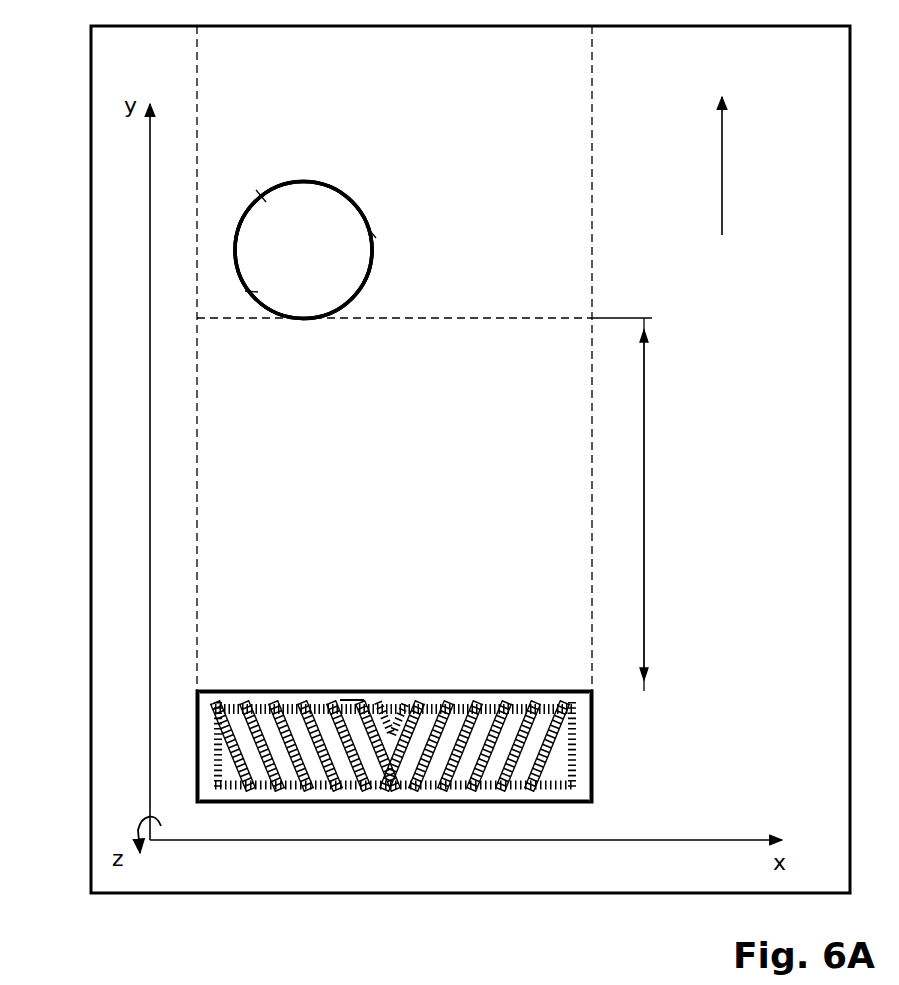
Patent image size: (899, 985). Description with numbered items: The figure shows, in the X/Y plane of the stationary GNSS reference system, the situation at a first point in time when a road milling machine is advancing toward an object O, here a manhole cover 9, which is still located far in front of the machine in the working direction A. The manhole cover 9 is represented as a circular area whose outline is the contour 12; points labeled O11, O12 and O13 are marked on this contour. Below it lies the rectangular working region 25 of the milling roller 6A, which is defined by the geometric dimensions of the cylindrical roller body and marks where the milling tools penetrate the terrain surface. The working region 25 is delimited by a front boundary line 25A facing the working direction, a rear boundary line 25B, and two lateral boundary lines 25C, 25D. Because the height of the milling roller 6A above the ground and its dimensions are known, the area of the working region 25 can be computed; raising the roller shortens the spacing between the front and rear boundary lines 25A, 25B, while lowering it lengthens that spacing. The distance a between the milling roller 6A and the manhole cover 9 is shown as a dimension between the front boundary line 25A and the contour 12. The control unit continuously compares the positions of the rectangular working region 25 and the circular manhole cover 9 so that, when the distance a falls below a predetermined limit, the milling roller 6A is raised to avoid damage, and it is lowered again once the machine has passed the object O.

The object O is at (372, 180).
The manhole cover 9 is at (327, 207).
The contour 12 is at (371, 273).
The object point O11 is at (252, 291).
The object point O12 is at (371, 232).
The object point O13 is at (261, 196).
The working region 25 is at (492, 674).
The front boundary line 25A is at (408, 692).
The rear boundary line 25B is at (407, 802).
The lateral boundary line 25C is at (592, 745).
The lateral boundary line 25D is at (197, 747).
The milling roller 6A is at (352, 694).
The working direction A is at (722, 171).
The distance a is at (644, 517).